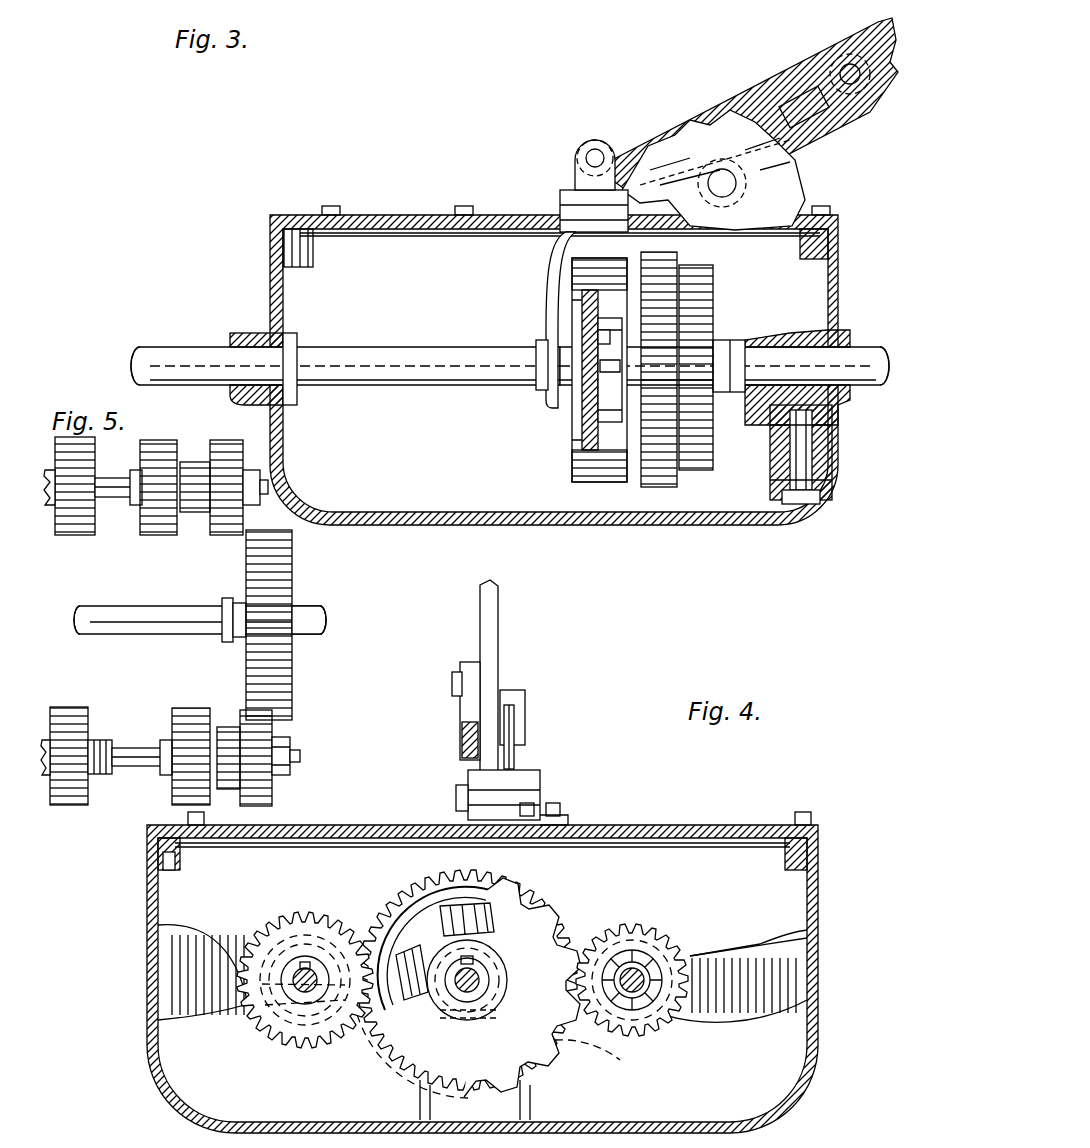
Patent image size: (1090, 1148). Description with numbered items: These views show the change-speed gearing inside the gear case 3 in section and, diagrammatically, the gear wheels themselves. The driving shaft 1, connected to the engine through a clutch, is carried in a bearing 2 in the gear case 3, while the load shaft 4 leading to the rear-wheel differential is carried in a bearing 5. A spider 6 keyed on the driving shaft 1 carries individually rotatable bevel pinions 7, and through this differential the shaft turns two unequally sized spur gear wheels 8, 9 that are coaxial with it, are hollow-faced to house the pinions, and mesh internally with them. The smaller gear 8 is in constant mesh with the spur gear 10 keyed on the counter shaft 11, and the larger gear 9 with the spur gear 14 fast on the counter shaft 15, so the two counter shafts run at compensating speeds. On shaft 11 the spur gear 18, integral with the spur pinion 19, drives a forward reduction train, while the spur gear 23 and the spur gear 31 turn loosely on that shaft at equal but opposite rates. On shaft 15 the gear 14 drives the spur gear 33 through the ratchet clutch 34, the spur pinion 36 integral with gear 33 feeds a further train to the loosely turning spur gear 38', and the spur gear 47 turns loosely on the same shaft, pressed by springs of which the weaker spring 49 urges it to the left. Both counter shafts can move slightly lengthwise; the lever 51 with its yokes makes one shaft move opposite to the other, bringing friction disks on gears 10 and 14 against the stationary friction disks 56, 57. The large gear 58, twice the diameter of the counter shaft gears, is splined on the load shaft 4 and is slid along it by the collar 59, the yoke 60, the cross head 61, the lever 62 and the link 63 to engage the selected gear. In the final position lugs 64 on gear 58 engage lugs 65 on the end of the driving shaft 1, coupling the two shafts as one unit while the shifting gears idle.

In FIG. 3, the driving shaft 1 is at (872, 365).
In FIG. 5, the driving shaft 1 is at (322, 622).
In FIG. 3, the bearing 2 is at (838, 350).
In FIG. 3, the gear case 3 is at (272, 268).
In FIG. 4, the gear case 3 is at (150, 892).
In FIG. 3, the load shaft 4 is at (186, 360).
In FIG. 5, the load shaft 4 is at (108, 620).
In FIG. 3, the bearing 5 is at (250, 348).
In FIG. 4, the spider 6 is at (500, 940).
In FIG. 4, the bevel pinions 7 is at (490, 906).
In FIG. 3, the spur gear wheel 8 is at (712, 290).
In FIG. 4, the spur gear wheel 8 is at (422, 898).
In FIG. 3, the spur gear wheel 9 is at (670, 260).
In FIG. 4, the spur gear wheel 9 is at (565, 912).
In FIG. 4, the spur gear 10 is at (300, 928).
In FIG. 5, the counter shaft 11 is at (114, 482).
In FIG. 4, the counter shaft 11 is at (296, 972).
In FIG. 4, the spur gear 14 is at (660, 1030).
In FIG. 5, the counter shaft 15 is at (140, 760).
In FIG. 4, the counter shaft 15 is at (790, 978).
In FIG. 5, the spur gear 18 is at (230, 535).
In FIG. 5, the spur pinion 19 is at (195, 470).
In FIG. 5, the spur gear 23 is at (162, 535).
In FIG. 5, the spur gear 31 is at (75, 535).
In FIG. 5, the spur gear 33 is at (272, 722).
In FIG. 5, the clutch 34 is at (290, 744).
In FIG. 4, the clutch 34 is at (645, 968).
In FIG. 5, the spur pinion 36 is at (230, 730).
In FIG. 5, the spur gear 38' is at (191, 741).
In FIG. 5, the spur gear 47 is at (70, 712).
In FIG. 5, the spring 49 is at (100, 742).
In FIG. 3, the lever 51 is at (822, 440).
In FIG. 4, the lever 51 is at (585, 1056).
In FIG. 4, the stationary friction disk 56 is at (270, 1030).
In FIG. 4, the stationary friction disk 57 is at (660, 938).
In FIG. 3, the gear 58 is at (572, 470).
In FIG. 5, the gear 58 is at (292, 565).
In FIG. 3, the collar 59 is at (540, 390).
In FIG. 5, the collar 59 is at (226, 604).
In FIG. 3, the yoke 60 is at (550, 405).
In FIG. 3, the cross head 61 is at (570, 198).
In FIG. 3, the shift lever 62 is at (885, 40).
In FIG. 4, the shift lever 62 is at (498, 632).
In FIG. 3, the link 63 is at (705, 125).
In FIG. 4, the link 63 is at (462, 712).
In FIG. 3, the lugs 64 is at (598, 336).
In FIG. 3, the lugs 65 is at (598, 362).
In FIG. 4, the lugs 65 is at (492, 968).